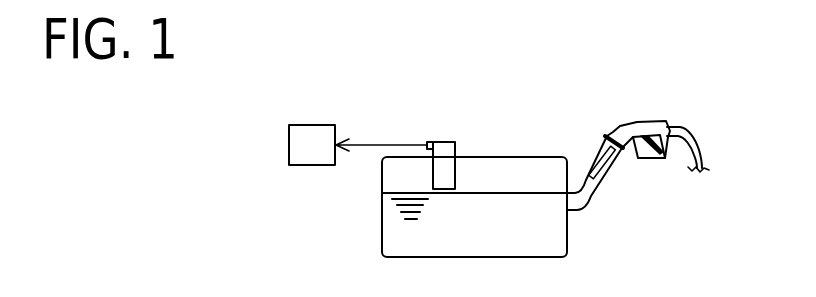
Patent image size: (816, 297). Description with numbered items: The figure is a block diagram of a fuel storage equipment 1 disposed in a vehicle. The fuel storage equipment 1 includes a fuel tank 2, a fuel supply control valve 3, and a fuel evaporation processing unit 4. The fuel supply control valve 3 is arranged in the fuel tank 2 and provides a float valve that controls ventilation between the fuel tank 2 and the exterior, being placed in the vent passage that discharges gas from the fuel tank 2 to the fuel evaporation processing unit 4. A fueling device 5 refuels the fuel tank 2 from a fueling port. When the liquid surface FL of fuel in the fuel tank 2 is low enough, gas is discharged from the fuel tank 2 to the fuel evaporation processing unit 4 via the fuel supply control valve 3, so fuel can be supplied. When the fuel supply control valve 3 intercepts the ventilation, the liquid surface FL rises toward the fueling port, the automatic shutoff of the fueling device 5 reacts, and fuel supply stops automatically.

The fuel storage equipment 1 is at (548, 145).
The fuel tank 2 is at (485, 156).
The fuel supply control valve 3 is at (445, 141).
The fuel evaporation processing unit 4 is at (289, 137).
The fueling device 5 is at (697, 141).
The liquid surface FL is at (382, 193).